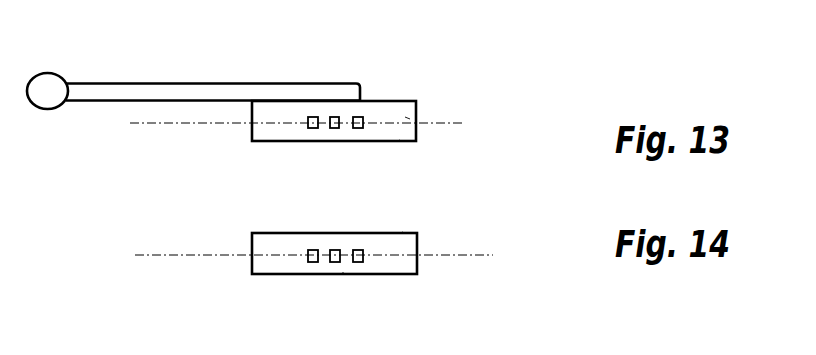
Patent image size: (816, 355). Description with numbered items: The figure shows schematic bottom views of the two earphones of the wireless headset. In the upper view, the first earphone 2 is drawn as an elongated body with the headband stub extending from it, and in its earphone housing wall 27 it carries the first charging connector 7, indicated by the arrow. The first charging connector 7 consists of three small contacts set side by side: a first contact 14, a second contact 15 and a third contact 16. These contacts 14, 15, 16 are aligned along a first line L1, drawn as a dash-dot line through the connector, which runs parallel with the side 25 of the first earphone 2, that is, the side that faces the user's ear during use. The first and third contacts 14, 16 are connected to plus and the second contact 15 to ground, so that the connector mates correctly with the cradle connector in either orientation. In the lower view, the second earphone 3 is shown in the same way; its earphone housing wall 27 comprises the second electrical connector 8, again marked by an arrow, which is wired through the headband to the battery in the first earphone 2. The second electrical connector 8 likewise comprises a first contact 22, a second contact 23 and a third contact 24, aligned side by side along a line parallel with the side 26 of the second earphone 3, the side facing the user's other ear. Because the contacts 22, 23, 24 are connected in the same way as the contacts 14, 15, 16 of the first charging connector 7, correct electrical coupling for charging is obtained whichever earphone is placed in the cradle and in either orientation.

In FIG. 13, the first earphone 2 is at (392, 118).
In FIG. 14, the second earphone 3 is at (410, 238).
In FIG. 13, the first charging connector 7 is at (293, 156).
In FIG. 14, the second electrical connector 8 is at (375, 286).
In FIG. 13, the first contact 14 is at (308, 128).
In FIG. 13, the second contact 15 is at (333, 117).
In FIG. 13, the third contact 16 is at (358, 128).
In FIG. 14, the first contact 22 is at (313, 262).
In FIG. 14, the second contact 23 is at (337, 250).
In FIG. 14, the third contact 24 is at (355, 250).
In FIG. 13, the side 25 is at (397, 141).
In FIG. 14, the side 26 is at (400, 233).
In FIG. 13, the earphone housing wall 27 is at (405, 117).
In FIG. 14, the earphone housing wall 27 is at (343, 272).
In FIG. 13, the first line L1 is at (145, 124).
In FIG. 14, the first line L1 is at (172, 255).